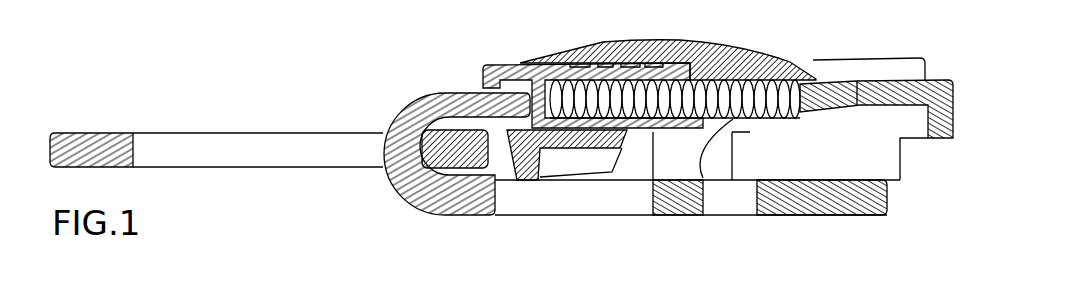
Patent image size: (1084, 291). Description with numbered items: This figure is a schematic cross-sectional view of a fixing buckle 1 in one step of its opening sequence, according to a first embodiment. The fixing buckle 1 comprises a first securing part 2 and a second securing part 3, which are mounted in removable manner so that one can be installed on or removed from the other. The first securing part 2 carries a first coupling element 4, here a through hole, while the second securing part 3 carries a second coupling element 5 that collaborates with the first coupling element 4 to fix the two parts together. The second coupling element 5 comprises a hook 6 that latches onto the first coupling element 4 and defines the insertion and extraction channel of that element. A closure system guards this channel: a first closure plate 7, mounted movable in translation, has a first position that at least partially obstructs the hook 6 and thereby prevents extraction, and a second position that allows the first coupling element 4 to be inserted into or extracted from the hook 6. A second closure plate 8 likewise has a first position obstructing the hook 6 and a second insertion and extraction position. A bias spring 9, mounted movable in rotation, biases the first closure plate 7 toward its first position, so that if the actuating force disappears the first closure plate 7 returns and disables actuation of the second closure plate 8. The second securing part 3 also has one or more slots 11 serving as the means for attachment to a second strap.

The fixing buckle 1 is at (207, 58).
The first securing part 2 is at (68, 133).
The second securing part 3 is at (883, 193).
The first coupling element 4 is at (236, 196).
The second coupling element 5 is at (398, 86).
The hook 6 is at (388, 190).
The first closure plate 7 is at (756, 45).
The second closure plate 8 is at (528, 180).
The bias spring 9 is at (704, 120).
The slot 11 is at (719, 213).